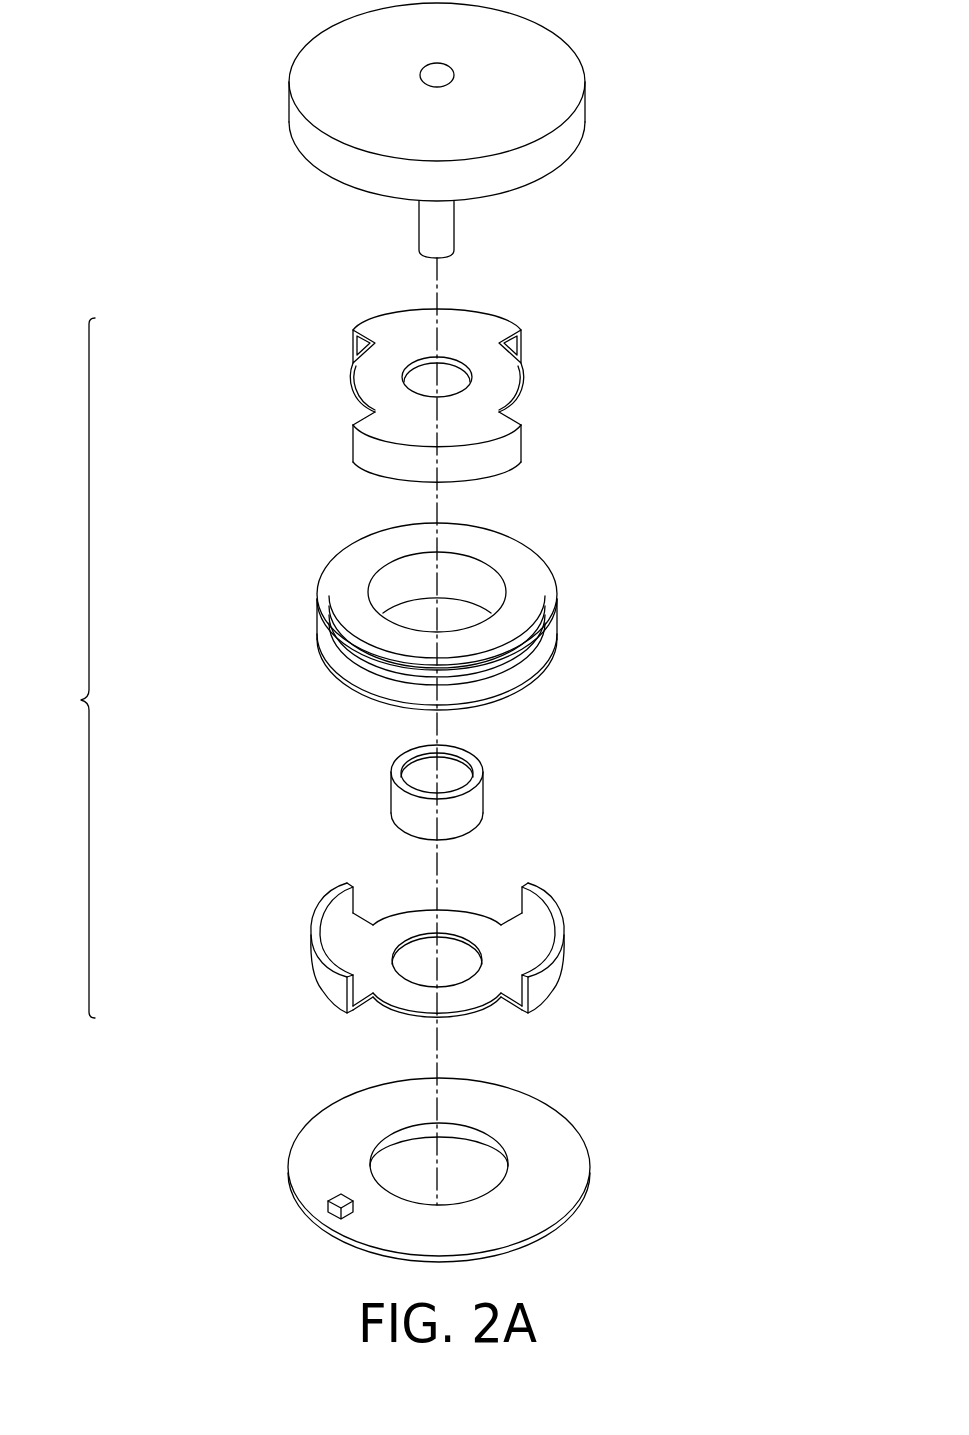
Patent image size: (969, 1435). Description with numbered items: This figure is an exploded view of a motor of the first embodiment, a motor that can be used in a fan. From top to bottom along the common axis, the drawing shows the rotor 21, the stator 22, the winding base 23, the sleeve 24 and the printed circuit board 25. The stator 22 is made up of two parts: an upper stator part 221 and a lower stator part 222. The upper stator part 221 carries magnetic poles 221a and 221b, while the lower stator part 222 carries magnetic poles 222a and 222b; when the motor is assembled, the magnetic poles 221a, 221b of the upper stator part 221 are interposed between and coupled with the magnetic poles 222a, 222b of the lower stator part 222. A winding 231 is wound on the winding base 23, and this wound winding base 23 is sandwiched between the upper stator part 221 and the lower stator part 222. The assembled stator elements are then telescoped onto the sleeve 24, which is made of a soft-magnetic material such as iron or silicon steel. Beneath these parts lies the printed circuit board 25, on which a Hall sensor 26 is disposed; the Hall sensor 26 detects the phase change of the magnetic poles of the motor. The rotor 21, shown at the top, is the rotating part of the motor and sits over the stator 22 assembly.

The rotor 21 is at (280, 101).
The stator 22 is at (389, 663).
The upper stator part 221 is at (340, 346).
The magnetic pole 221a is at (520, 333).
The magnetic pole 221b is at (360, 447).
The winding base 23 is at (307, 586).
The winding 231 is at (345, 650).
The sleeve 24 is at (378, 794).
The lower stator part 222 is at (310, 907).
The magnetic pole 222a is at (330, 985).
The magnetic pole 222b is at (553, 983).
The printed circuit board 25 is at (295, 1127).
The Hall sensor 26 is at (330, 1205).